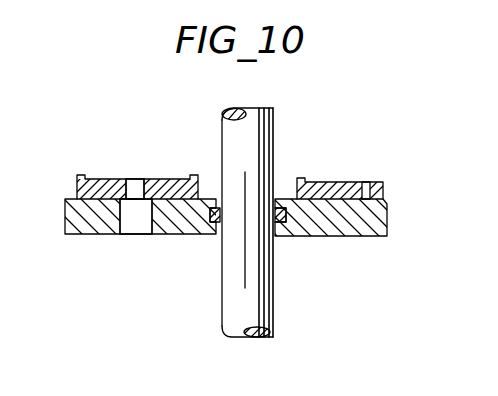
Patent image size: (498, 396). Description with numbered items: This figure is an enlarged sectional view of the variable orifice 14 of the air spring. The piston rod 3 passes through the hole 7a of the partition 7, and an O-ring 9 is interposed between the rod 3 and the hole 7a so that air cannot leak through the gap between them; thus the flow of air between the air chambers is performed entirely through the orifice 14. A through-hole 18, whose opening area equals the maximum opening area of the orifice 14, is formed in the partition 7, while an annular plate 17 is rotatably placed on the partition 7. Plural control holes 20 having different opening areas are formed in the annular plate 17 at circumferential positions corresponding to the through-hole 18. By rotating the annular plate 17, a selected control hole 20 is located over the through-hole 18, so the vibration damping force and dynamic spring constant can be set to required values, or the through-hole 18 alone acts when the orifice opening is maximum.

The piston rod 3 is at (262, 131).
The partition 7 is at (323, 206).
The hole of the partition 7a is at (222, 232).
The O-ring 9 is at (278, 237).
The orifice 14 is at (127, 174).
The annular plate 17 is at (93, 178).
The through-hole 18 is at (137, 222).
The control hole 20 is at (137, 190).